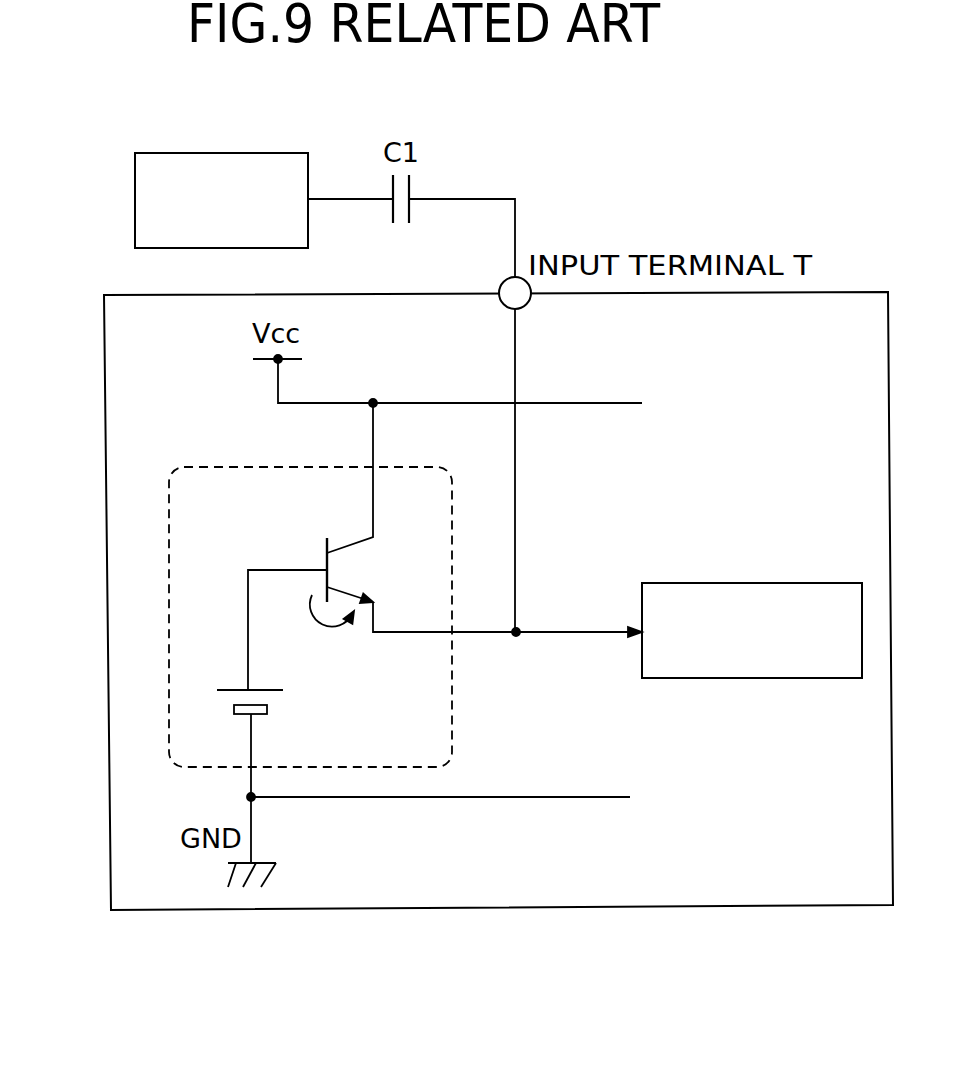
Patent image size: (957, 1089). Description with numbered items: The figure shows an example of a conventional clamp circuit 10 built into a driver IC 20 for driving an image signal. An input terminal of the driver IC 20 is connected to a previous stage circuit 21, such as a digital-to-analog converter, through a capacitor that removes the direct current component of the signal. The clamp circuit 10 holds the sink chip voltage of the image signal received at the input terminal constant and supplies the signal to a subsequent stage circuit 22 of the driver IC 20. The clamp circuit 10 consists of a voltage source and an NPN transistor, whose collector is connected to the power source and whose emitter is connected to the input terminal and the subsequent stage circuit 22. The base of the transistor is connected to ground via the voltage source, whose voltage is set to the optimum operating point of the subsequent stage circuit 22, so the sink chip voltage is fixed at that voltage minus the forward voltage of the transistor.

The clamp circuit 10 is at (245, 467).
The driver IC 20 is at (104, 335).
The previous stage circuit 21 is at (230, 153).
The subsequent stage circuit 22 is at (720, 583).